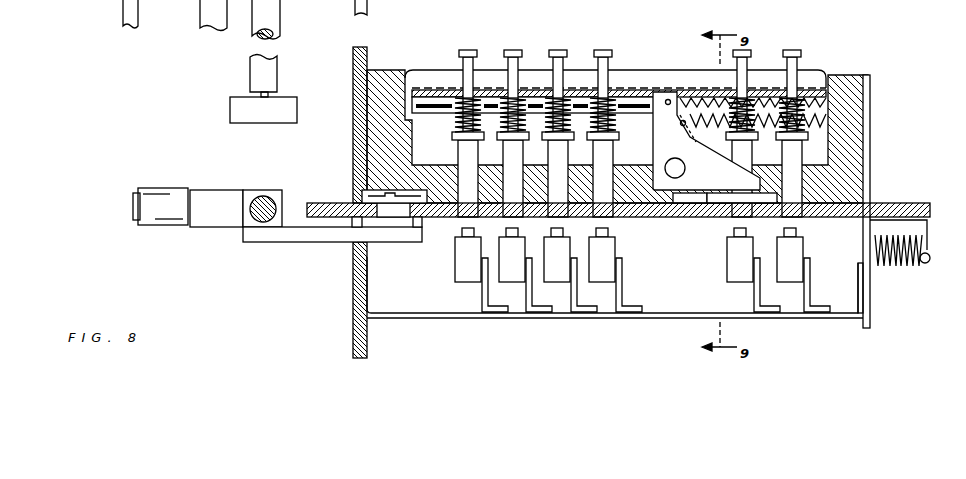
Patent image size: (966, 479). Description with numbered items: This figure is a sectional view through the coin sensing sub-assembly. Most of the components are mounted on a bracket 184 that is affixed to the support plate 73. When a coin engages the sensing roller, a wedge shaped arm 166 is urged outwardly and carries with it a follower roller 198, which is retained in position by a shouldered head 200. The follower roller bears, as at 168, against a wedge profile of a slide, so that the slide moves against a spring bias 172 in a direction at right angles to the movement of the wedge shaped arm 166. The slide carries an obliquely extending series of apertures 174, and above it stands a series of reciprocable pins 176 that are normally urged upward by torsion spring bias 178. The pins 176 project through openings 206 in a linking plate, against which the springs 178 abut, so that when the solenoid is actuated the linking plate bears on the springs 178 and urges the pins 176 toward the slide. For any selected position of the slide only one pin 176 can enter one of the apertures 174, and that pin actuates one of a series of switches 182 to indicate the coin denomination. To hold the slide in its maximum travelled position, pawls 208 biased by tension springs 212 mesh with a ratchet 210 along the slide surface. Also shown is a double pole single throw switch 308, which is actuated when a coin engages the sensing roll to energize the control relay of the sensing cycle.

The support plate 73 is at (362, 65).
The bracket 184 is at (373, 133).
The openings 206 is at (447, 92).
The reciprocable pins 176 is at (517, 53).
The torsion spring bias 178 is at (452, 113).
The tension springs 212 is at (712, 117).
The pawls 208 is at (725, 178).
The ratchet 210 is at (710, 207).
The apertures 174 is at (422, 218).
The bearing point of follower roller on wedge profile 168 is at (418, 210).
The shouldered head 200 is at (356, 196).
The follower roller 198 is at (360, 210).
The wedge shaped arm 166 is at (300, 243).
The switches 182 is at (465, 262).
The spring bias 172 is at (893, 266).
The double pole single throw switch 308 is at (230, 106).